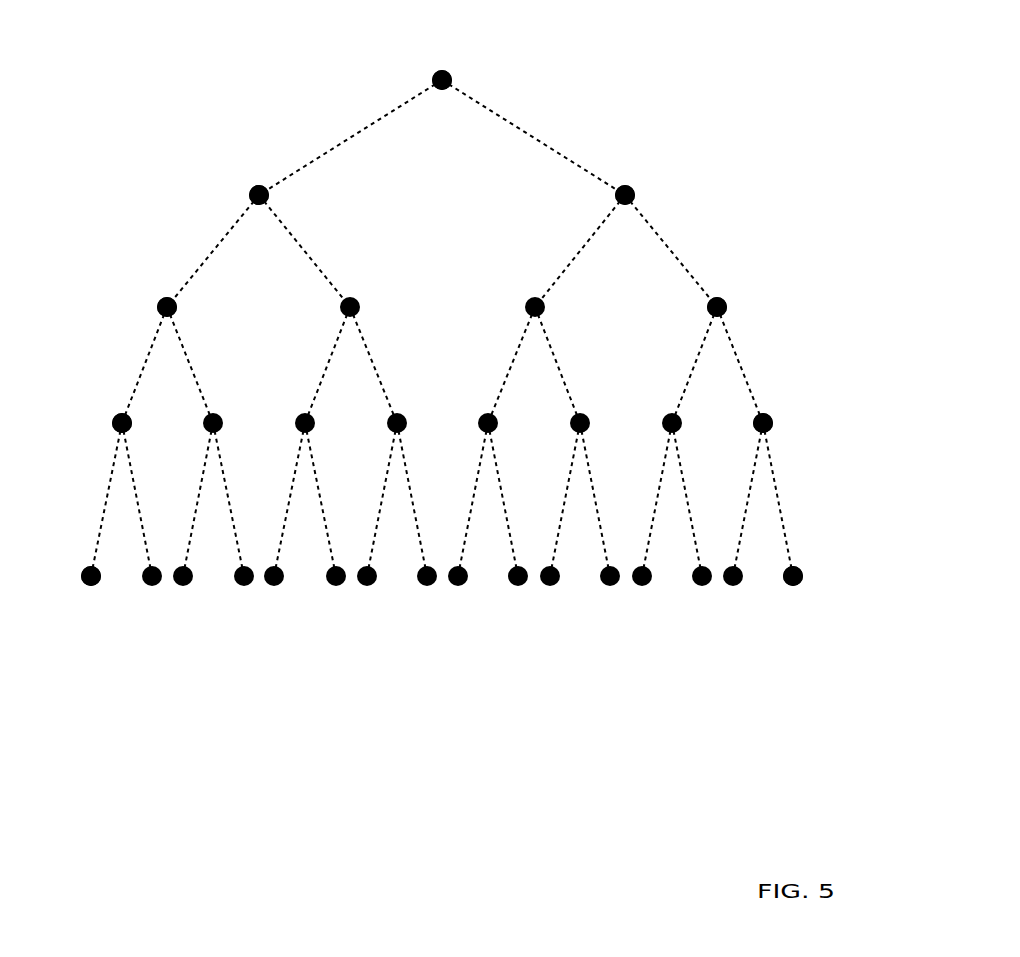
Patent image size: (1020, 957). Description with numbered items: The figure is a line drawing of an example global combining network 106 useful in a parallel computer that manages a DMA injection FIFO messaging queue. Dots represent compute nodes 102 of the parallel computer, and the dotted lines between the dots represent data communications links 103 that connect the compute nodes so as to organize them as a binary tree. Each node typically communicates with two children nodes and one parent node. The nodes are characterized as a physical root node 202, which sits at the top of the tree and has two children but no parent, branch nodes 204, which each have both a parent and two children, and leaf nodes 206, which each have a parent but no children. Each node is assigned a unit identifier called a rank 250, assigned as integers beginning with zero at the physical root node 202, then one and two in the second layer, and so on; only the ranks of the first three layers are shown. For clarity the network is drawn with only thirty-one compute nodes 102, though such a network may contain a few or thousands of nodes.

The global combining network 106 is at (476, 411).
The data communications links 103 is at (357, 133).
The compute nodes 102 is at (518, 586).
The physical root node 202 is at (462, 72).
The rank 250 is at (590, 205).
The branch nodes 204 is at (815, 143).
The leaf nodes 206 is at (498, 558).